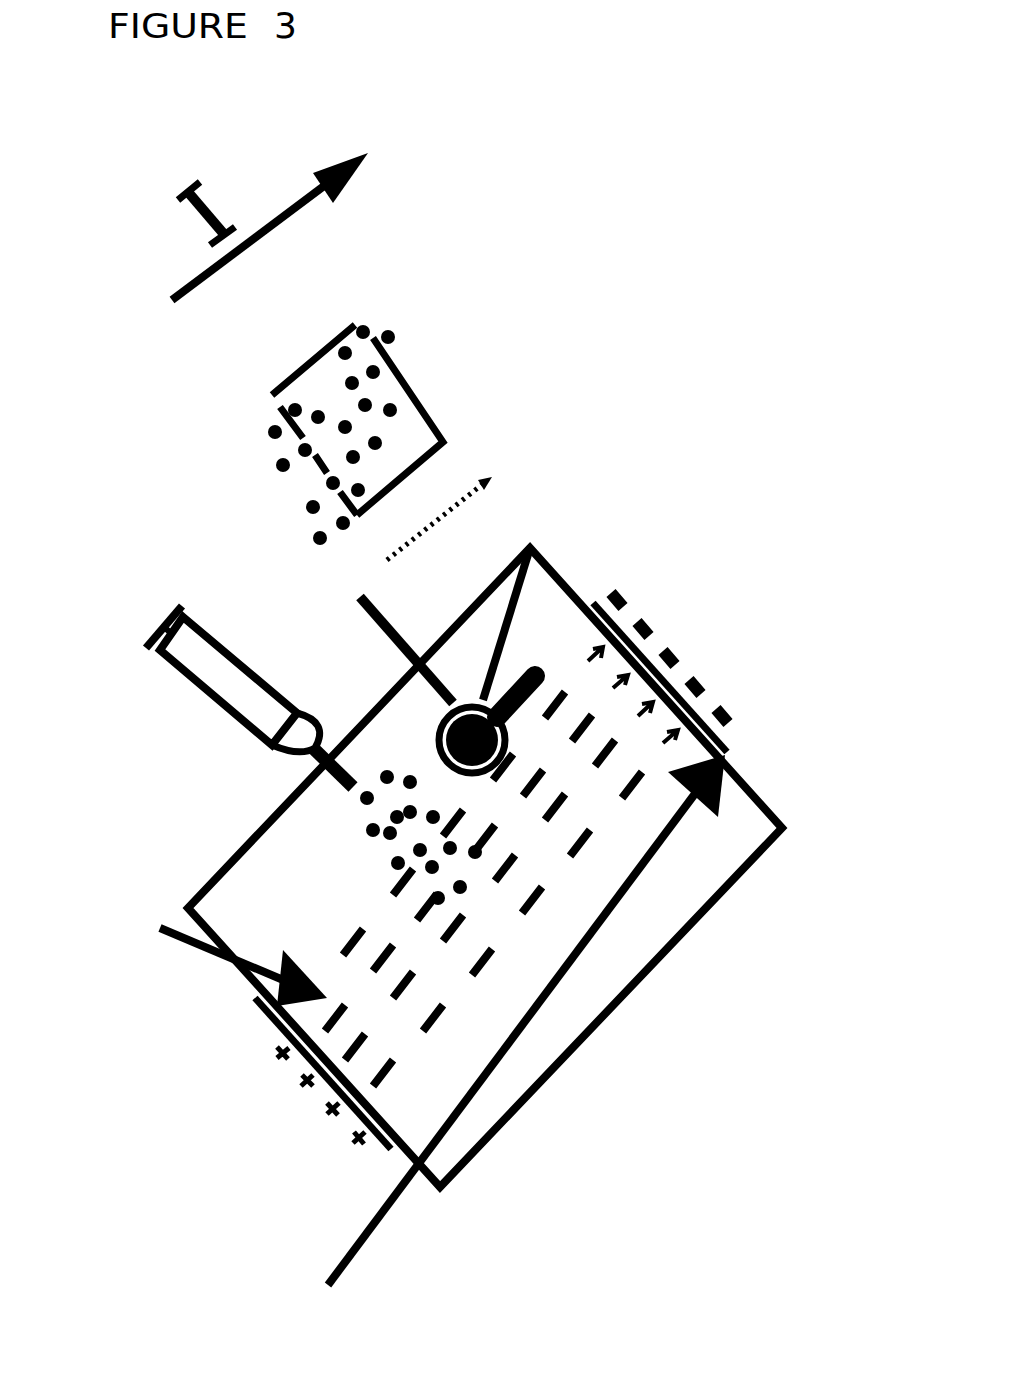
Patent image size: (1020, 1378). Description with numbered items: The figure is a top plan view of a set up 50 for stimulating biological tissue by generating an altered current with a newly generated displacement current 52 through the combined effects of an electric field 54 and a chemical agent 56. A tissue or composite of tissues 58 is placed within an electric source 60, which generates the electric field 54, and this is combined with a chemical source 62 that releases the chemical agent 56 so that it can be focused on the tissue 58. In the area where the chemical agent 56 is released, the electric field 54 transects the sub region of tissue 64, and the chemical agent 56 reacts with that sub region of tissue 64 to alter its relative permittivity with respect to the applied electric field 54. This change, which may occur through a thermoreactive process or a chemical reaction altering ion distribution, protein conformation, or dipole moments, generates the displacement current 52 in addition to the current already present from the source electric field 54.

The set up 50 is at (637, 228).
The displacement current 52 is at (241, 198).
The electric field 54 is at (247, 1030).
The chemical agent 56 is at (368, 847).
The tissue 58 is at (644, 968).
The electric source 60 is at (318, 1150).
The chemical source 62 is at (212, 700).
The sub region of tissue 64 is at (283, 410).